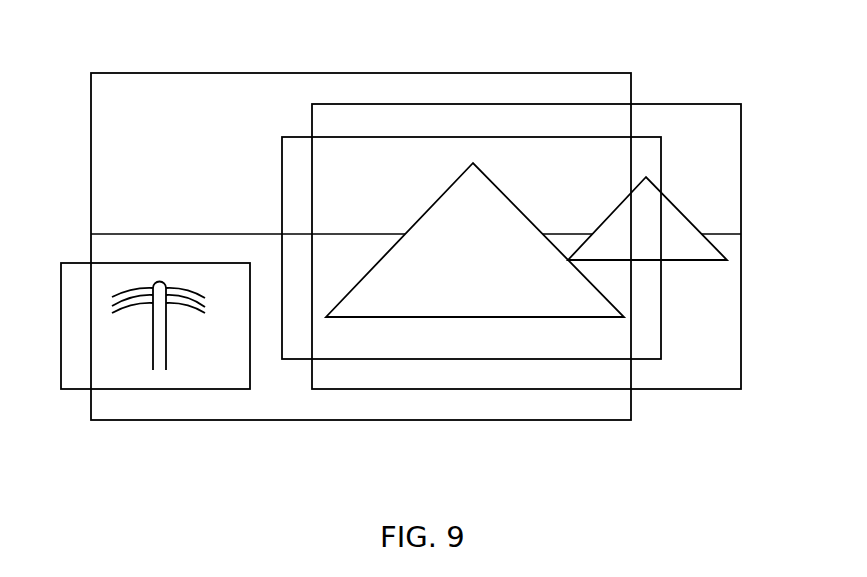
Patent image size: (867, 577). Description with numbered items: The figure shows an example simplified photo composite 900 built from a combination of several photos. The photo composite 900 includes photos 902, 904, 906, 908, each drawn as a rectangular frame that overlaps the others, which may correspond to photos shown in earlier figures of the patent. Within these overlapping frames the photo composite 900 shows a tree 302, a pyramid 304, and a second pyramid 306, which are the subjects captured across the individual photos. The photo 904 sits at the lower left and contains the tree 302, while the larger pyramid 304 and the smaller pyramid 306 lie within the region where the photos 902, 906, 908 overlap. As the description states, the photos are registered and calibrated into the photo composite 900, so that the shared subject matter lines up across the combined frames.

The photo composite 900 is at (405, 250).
The photo 902 is at (610, 73).
The photo 904 is at (80, 263).
The third window 906 is at (722, 104).
The fourth window 908 is at (661, 165).
The tree 302 is at (166, 325).
The pyramid 304 is at (430, 208).
The pyramid 306 is at (607, 218).